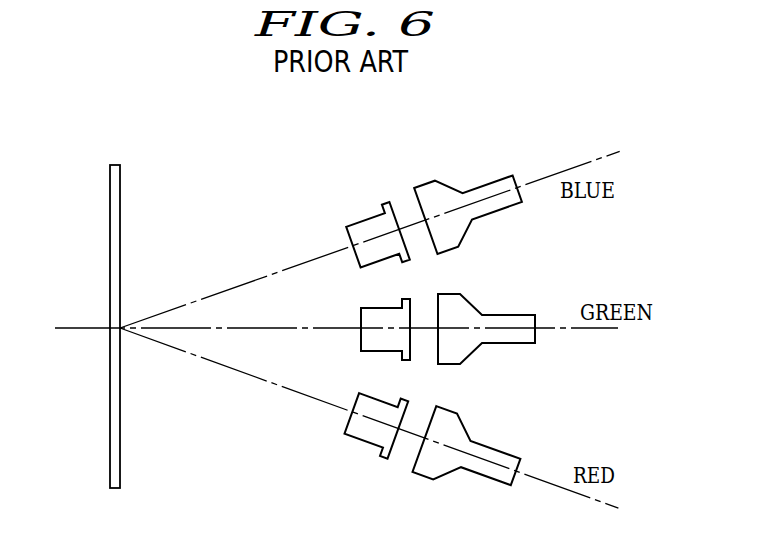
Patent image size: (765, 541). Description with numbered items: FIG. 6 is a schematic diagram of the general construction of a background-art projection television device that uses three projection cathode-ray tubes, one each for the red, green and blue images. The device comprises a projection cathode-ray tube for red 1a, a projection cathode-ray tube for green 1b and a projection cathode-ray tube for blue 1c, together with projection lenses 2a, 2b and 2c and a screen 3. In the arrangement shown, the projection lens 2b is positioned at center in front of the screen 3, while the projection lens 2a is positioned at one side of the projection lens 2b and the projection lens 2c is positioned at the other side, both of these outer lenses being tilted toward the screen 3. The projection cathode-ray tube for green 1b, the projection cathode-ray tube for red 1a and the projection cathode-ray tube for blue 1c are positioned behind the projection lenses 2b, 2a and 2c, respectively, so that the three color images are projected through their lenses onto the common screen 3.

The projection cathode-ray tube for red 1a is at (480, 475).
The projection cathode-ray tube for green 1b is at (473, 303).
The projection cathode-ray tube for blue 1c is at (480, 183).
The projection lens 2a is at (362, 442).
The projection lens 2b is at (383, 308).
The projection lens 2c is at (362, 218).
The screen 3 is at (121, 244).